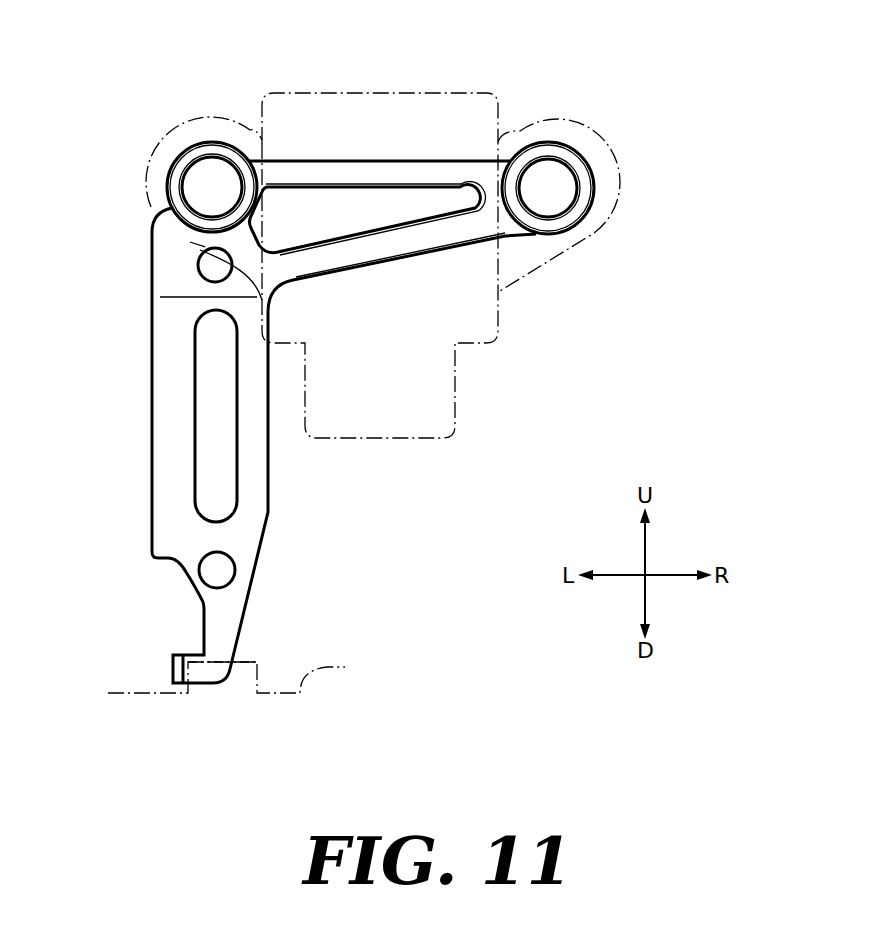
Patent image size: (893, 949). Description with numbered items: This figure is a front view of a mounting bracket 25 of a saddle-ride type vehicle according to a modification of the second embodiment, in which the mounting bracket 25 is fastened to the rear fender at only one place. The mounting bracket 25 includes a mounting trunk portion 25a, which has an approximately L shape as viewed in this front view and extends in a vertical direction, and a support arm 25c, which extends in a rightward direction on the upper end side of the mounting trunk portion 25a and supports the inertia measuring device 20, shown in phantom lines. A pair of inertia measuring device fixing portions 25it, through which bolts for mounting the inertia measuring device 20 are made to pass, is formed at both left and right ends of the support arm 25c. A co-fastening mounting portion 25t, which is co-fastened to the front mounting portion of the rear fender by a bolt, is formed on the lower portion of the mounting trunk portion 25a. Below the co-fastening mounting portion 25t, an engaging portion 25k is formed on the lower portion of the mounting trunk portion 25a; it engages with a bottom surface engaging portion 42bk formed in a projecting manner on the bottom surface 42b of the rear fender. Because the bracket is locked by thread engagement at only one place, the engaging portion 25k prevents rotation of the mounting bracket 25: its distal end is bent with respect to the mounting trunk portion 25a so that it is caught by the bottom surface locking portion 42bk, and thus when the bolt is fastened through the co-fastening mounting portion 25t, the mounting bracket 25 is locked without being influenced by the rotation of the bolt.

The inertia measuring device 20 is at (469, 90).
The mounting bracket 25 is at (146, 265).
The inertia measuring device fixing portion 25it is at (218, 157).
The support arm 25c is at (385, 183).
The mounting trunk portion 25a is at (174, 378).
The co-fastening mounting portion 25t is at (236, 571).
The engaging portion 25k is at (172, 665).
The bottom surface 42b is at (340, 667).
The bottom surface engaging portion 42bk is at (223, 660).